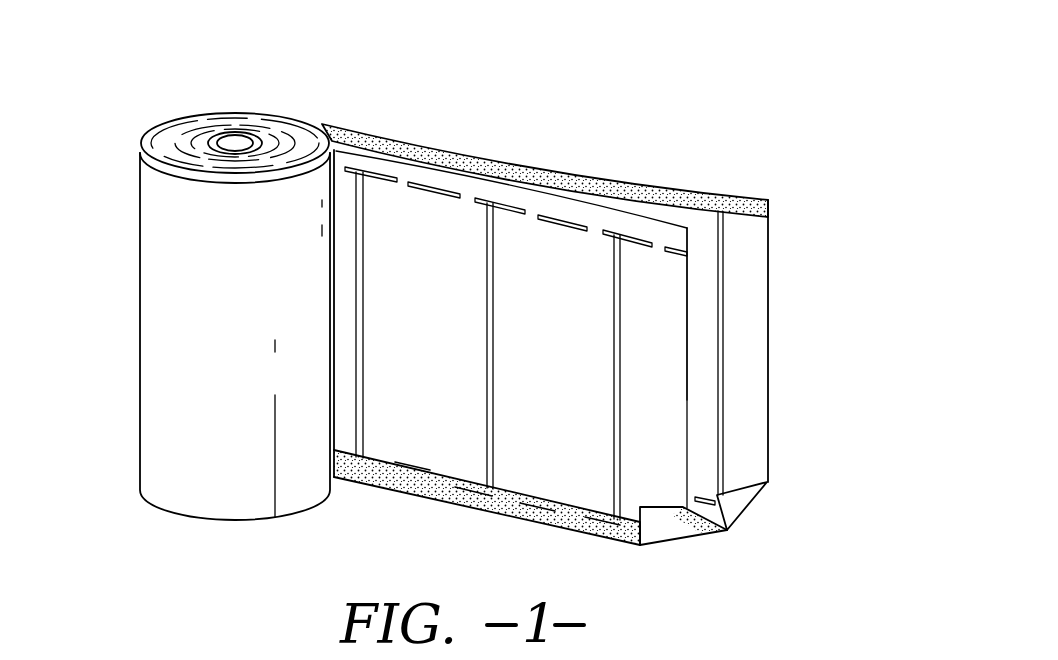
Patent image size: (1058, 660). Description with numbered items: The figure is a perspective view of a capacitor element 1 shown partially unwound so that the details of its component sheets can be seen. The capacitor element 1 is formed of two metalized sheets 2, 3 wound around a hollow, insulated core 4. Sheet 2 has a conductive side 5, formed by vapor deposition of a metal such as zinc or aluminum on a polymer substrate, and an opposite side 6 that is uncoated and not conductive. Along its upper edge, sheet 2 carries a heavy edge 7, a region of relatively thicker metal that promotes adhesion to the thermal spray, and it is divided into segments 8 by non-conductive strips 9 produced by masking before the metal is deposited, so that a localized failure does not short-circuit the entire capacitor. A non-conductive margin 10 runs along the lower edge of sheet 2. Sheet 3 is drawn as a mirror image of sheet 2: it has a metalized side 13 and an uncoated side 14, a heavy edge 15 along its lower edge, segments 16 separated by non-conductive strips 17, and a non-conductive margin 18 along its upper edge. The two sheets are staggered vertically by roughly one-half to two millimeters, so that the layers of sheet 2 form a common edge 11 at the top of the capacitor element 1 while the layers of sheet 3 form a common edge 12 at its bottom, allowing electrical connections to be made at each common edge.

The capacitor element 1 is at (114, 118).
The metalized sheet 2 is at (687, 400).
The metalized sheet 3 is at (770, 237).
The core 4 is at (236, 134).
The conductive side 5 is at (551, 251).
The opposite side 6 is at (652, 527).
The heavy edge 7 is at (458, 158).
The segments 8 is at (425, 450).
The non-conductive strips 9 is at (485, 445).
The non-conductive margin 10 is at (373, 478).
The common edge 11 is at (213, 128).
The common edge 12 is at (185, 518).
The metalized side 13 is at (742, 362).
The uncoated side 14 is at (733, 503).
The heavy edge 15 is at (698, 530).
The segments 16 is at (707, 272).
The non-conductive strips 17 is at (718, 227).
The non-conductive margin 18 is at (742, 203).